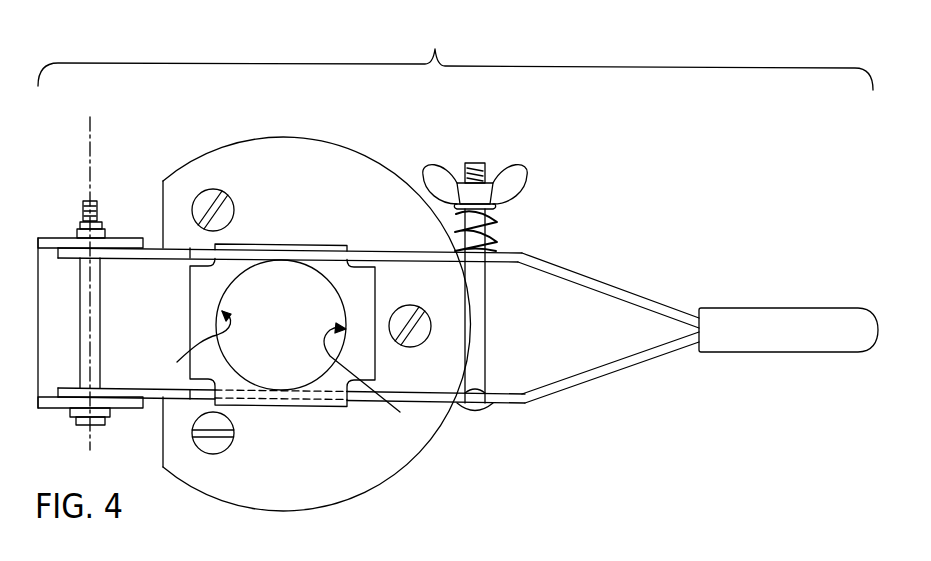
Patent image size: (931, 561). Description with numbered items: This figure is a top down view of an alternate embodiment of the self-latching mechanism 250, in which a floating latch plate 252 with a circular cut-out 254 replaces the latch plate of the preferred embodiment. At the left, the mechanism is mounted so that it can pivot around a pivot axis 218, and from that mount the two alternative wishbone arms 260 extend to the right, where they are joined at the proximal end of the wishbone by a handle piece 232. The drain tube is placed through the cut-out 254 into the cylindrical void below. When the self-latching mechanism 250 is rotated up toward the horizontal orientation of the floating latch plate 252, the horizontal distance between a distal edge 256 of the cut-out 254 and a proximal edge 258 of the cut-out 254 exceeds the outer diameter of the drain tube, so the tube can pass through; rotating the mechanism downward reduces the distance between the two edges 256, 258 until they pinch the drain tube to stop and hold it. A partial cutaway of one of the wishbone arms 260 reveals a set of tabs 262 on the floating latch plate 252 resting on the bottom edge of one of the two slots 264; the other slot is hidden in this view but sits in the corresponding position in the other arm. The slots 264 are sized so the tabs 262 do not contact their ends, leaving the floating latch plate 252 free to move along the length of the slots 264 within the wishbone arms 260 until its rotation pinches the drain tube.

The pivot axis 218 is at (90, 141).
The handle piece 232 is at (793, 308).
The self-latching mechanism 250 is at (455, 56).
The floating latch plate 252 is at (337, 277).
The circular cut-out 254 is at (322, 278).
The distal edge 256 is at (369, 380).
The proximal edge 258 is at (189, 349).
The wishbone arms 260 is at (625, 290).
The tabs 262 is at (247, 245).
The slots 264 is at (200, 398).